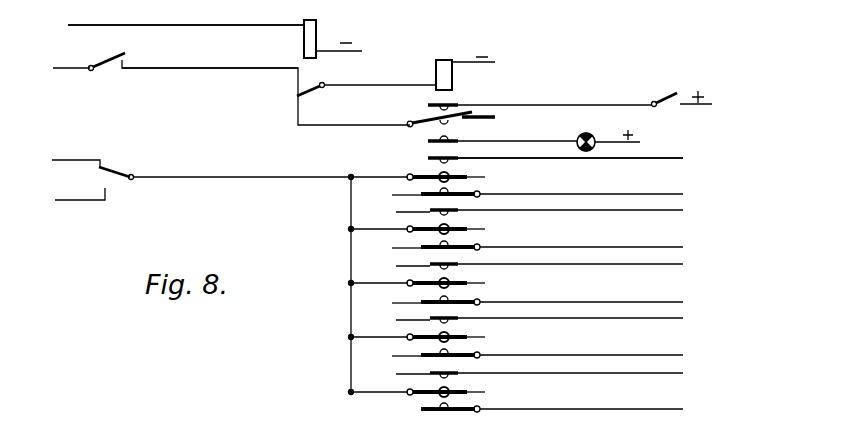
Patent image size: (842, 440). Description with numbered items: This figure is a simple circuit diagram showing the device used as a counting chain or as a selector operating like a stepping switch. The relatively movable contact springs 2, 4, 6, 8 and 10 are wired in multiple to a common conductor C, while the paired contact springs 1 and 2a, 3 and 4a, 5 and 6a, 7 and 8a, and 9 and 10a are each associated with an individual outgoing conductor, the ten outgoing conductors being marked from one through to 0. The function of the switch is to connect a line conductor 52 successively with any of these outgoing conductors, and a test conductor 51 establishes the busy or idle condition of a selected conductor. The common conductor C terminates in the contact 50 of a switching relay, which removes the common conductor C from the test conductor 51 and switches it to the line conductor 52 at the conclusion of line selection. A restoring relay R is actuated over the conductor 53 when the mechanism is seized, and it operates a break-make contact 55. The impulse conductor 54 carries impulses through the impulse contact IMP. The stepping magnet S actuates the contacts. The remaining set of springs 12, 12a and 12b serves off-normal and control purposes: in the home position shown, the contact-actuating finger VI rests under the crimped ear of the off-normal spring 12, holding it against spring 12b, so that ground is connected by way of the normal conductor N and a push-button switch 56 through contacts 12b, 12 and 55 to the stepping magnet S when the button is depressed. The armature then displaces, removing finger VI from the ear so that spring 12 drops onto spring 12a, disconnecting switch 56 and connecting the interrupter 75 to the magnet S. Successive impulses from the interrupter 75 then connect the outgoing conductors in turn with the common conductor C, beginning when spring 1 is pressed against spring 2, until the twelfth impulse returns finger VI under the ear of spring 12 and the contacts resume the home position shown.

The restoring relay R is at (318, 30).
The stepping magnet S is at (465, 73).
The impulse contact IMP is at (175, 74).
The conductor 53 is at (216, 27).
The impulse conductor 54 is at (188, 76).
The break-make contact 55 is at (312, 92).
The off-normal contact spring 12 is at (428, 120).
The contact spring 12a is at (428, 140).
The contact spring 12b is at (458, 104).
The contact-actuating finger VI is at (488, 121).
The normal conductor N is at (565, 104).
The switch 56 is at (668, 97).
The interrupter 75 is at (593, 135).
The contact spring 10a is at (428, 159).
The outgoing conductor 0 is at (578, 159).
The test conductor 51 is at (87, 157).
The line conductor 52 is at (88, 203).
The contact of switching relay 50 is at (122, 168).
The common conductor C is at (212, 179).
The contact spring 10 is at (431, 176).
The contact spring 9 is at (538, 194).
The contact spring 8a is at (534, 211).
The contact spring 8 is at (426, 228).
The contact spring 7 is at (538, 247).
The contact spring 6a is at (534, 265).
The contact spring 6 is at (426, 282).
The contact spring 5 is at (538, 302).
The contact spring 4a is at (534, 319).
The contact spring 4 is at (426, 336).
The contact spring 3 is at (538, 355).
The contact spring 2a is at (533, 374).
The contact spring 2 is at (426, 391).
The contact spring 1 is at (426, 412).